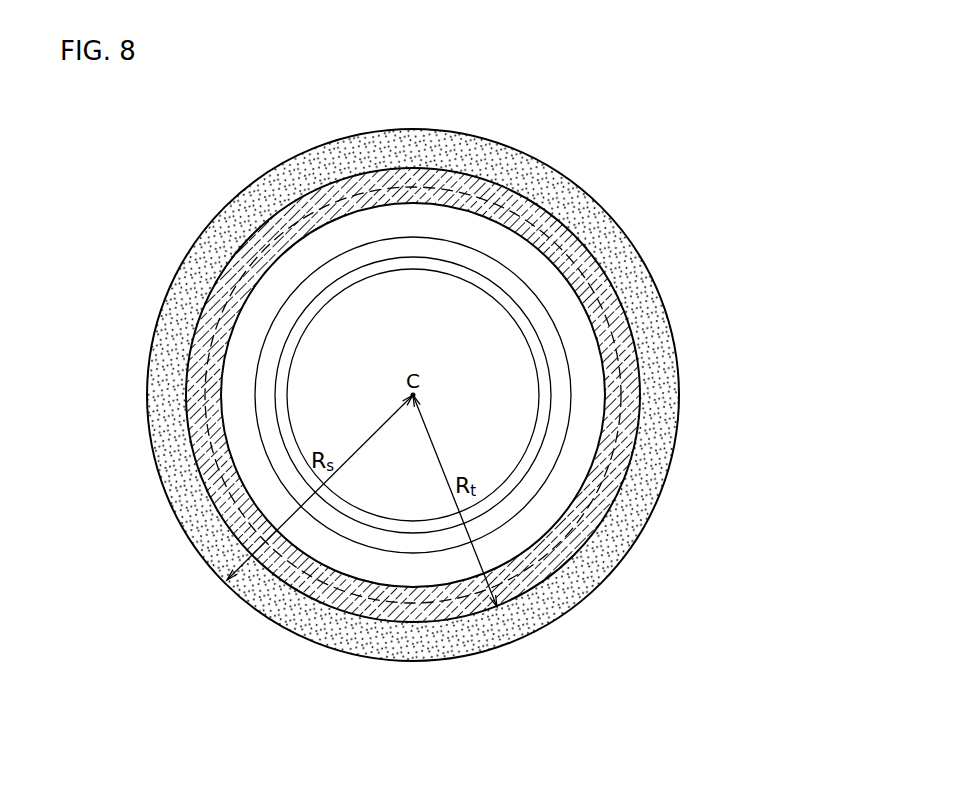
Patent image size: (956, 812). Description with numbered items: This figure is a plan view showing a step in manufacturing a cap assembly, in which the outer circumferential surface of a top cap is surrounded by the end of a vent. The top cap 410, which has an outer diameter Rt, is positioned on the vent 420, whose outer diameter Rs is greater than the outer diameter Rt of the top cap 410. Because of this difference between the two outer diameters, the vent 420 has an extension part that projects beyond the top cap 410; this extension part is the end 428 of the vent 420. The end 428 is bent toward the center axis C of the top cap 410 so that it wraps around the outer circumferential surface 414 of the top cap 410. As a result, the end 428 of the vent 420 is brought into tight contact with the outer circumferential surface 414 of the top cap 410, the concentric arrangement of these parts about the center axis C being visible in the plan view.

The top cap 410 is at (263, 307).
The outer circumferential surface 414 is at (600, 260).
The vent 420 is at (610, 572).
The end of the vent 428 is at (653, 465).